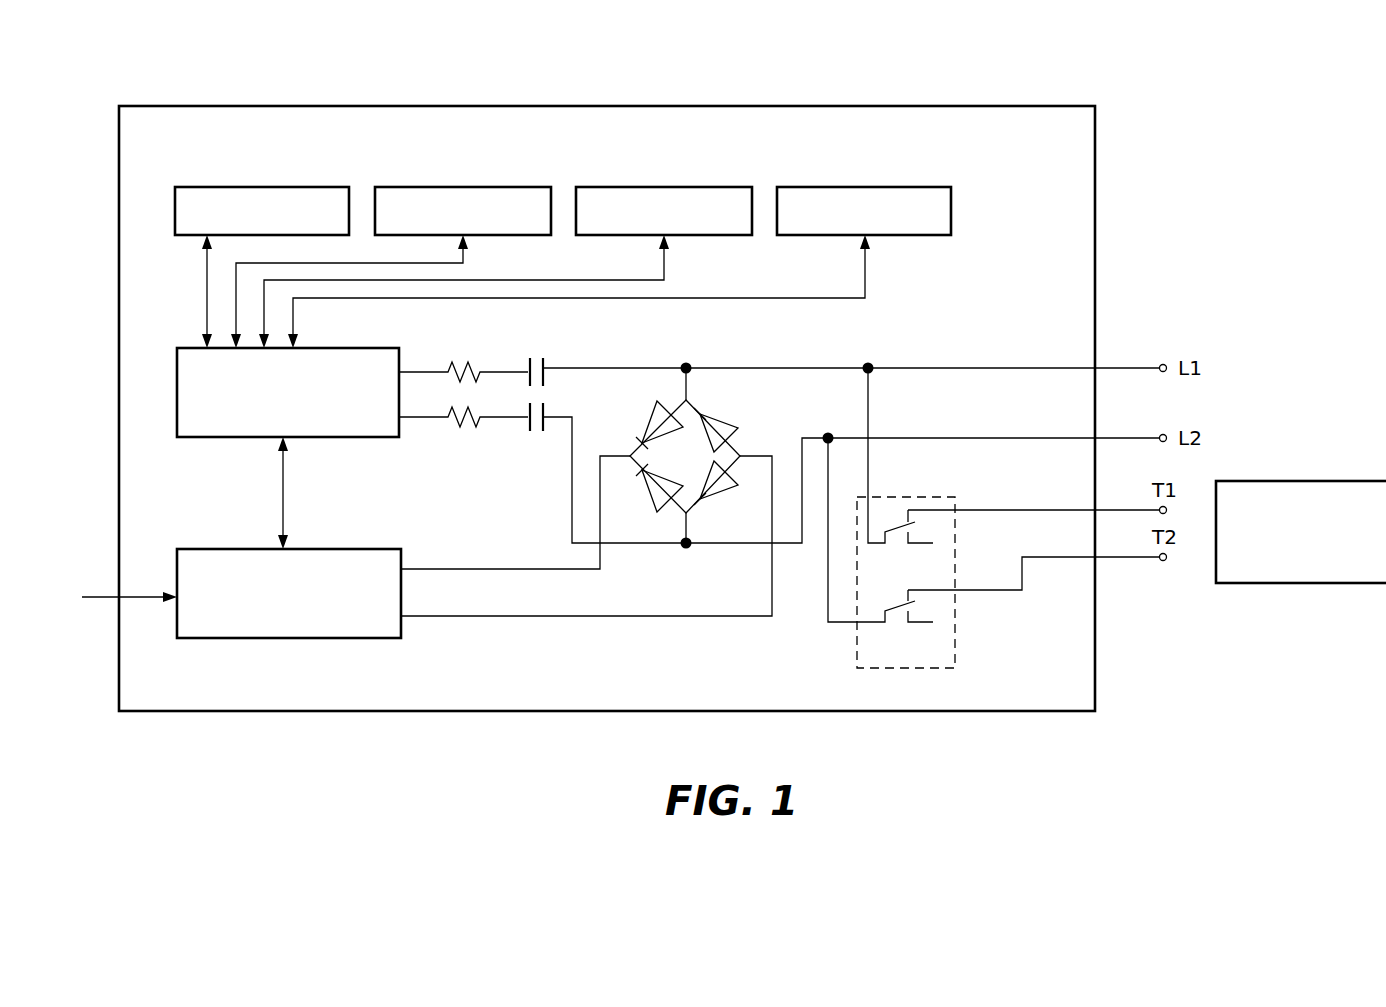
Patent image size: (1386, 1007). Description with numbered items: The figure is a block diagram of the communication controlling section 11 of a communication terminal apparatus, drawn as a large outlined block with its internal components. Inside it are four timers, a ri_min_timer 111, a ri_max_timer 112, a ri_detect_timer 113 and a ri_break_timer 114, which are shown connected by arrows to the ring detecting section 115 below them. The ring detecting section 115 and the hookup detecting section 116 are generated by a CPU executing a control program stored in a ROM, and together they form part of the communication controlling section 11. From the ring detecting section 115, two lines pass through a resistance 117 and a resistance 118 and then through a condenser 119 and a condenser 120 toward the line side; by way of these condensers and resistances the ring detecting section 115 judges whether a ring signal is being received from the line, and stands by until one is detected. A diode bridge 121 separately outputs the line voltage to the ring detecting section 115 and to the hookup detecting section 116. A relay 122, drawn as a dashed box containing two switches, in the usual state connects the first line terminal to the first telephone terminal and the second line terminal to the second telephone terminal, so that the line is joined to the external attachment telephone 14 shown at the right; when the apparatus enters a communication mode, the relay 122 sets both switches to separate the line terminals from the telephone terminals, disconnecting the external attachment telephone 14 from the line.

The communication controlling section 11 is at (500, 105).
The external attachment telephone 14 is at (1312, 480).
The ri_min_timer 111 is at (257, 186).
The ri_max_timer 112 is at (457, 186).
The ri_detect_timer 113 is at (660, 186).
The ri_break_timer 114 is at (860, 186).
The ring detecting section 115 is at (385, 348).
The hookup detecting section 116 is at (385, 549).
The resistance 117 is at (448, 363).
The resistance 118 is at (448, 408).
The condenser 119 is at (545, 357).
The condenser 120 is at (545, 405).
The diode bridge 121 is at (720, 416).
The relay 122 is at (930, 497).